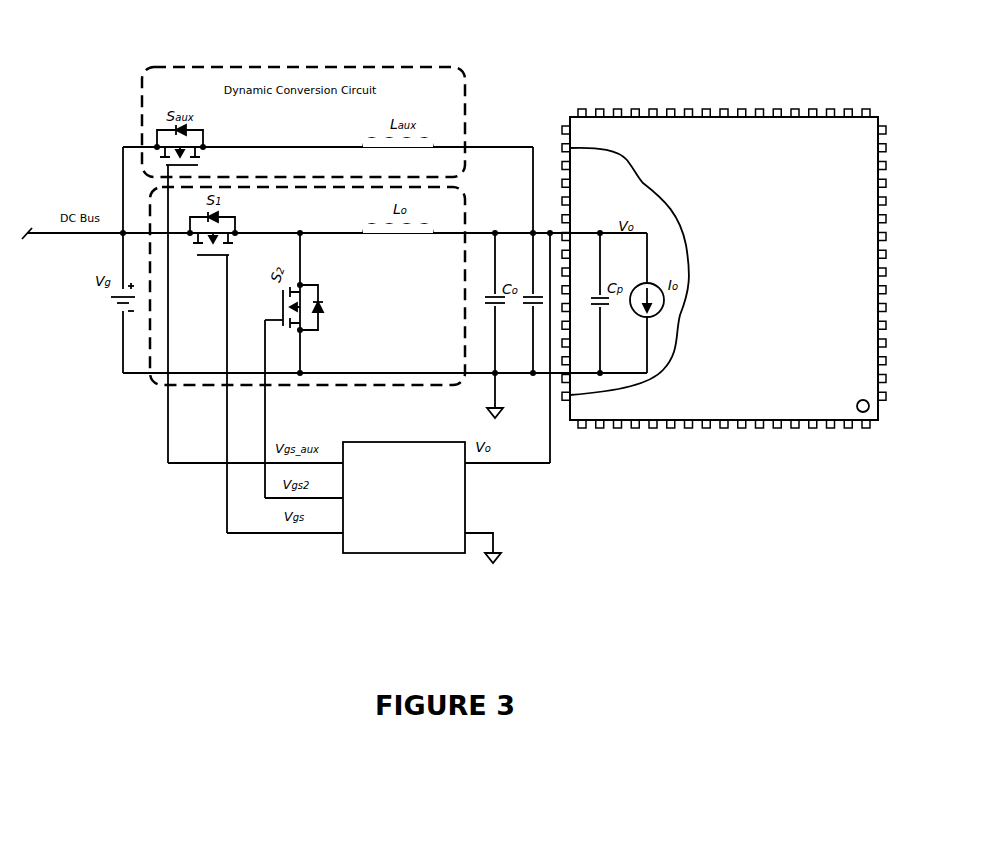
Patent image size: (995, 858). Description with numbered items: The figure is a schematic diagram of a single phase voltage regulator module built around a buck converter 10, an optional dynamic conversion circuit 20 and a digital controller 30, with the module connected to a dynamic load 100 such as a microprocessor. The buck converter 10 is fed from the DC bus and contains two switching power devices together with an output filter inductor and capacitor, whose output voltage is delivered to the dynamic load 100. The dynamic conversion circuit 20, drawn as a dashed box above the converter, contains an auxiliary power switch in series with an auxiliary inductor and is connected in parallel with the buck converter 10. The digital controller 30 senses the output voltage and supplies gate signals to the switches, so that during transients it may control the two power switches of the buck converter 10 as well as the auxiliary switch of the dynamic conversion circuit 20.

The buck converter 10 is at (157, 383).
The dynamic conversion circuit 20 is at (418, 63).
The digital controller 30 is at (405, 553).
The dynamic load 100 is at (773, 125).